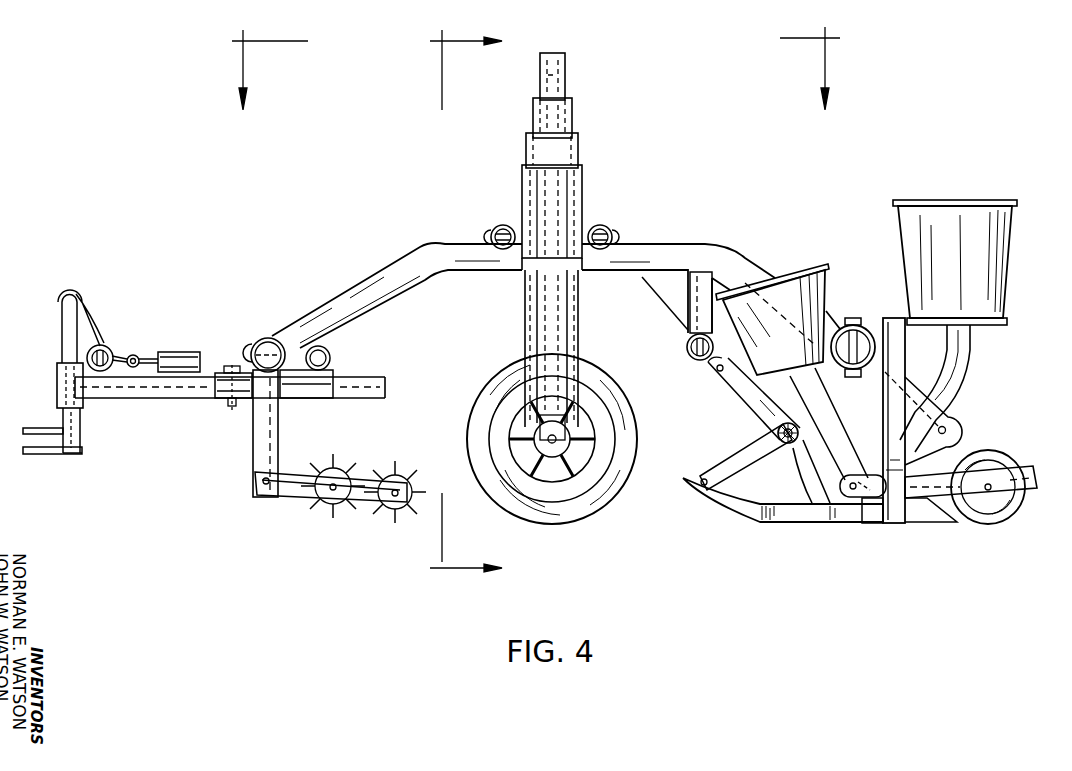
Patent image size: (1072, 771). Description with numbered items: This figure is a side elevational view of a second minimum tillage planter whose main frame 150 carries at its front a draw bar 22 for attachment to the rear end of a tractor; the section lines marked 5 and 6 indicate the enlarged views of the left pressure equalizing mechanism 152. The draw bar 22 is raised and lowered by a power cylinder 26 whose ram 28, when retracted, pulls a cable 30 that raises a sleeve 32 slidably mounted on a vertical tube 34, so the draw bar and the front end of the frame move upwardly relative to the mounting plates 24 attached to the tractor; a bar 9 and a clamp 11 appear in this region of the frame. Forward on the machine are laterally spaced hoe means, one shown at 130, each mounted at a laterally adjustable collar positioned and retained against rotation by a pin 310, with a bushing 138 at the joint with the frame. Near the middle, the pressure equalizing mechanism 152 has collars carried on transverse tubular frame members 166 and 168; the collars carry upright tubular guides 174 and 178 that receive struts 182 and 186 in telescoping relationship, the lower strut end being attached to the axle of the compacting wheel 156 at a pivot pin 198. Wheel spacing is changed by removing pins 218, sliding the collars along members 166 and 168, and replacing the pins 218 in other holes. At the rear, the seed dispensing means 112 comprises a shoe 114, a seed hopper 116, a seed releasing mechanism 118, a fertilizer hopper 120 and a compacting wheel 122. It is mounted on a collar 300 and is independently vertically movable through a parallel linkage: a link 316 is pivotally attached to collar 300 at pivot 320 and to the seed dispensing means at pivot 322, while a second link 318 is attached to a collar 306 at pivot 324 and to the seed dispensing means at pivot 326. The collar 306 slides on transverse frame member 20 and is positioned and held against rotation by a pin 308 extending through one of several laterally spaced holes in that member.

The section line 5- 5 is at (536, 68).
The section line 6- 6 is at (466, 301).
The tool bar 9 is at (308, 398).
The clamp bracket 11 is at (226, 404).
The transverse frame member 20 is at (867, 327).
The draw bar 22 is at (160, 398).
The mounting plates 24 is at (35, 455).
The hydraulic cylinder 26 is at (178, 352).
The ram 28 is at (137, 356).
The cable 30 is at (83, 328).
The sleeve 32 is at (57, 388).
The vertical tube 34 is at (81, 432).
The seed dispensing means 112 is at (795, 266).
The shoe 114 is at (731, 516).
The seed hopper 116 is at (828, 266).
The seed releasing mechanism 118 is at (822, 497).
The fertilizer hopper 120 is at (1009, 275).
The compacting wheel 122 is at (993, 451).
The hoe means 130 is at (248, 452).
The bushing 138 is at (268, 338).
The main frame 150 is at (672, 236).
The pressure equalizing mechanism 152 is at (580, 112).
The compacting wheel 156 is at (592, 513).
The transverse tubular frame member 166 is at (604, 227).
The transverse tubular frame member 168 is at (504, 226).
The upright tubular guide 174 is at (582, 182).
The upright tubular guide 178 is at (523, 173).
The strut 182 is at (578, 328).
The strut 186 is at (525, 320).
The pivot pin 198 is at (538, 117).
The pins 218 is at (612, 236).
The collar 300 is at (690, 352).
The collar 306 is at (836, 322).
The pin 308 is at (860, 378).
The pin 310 is at (243, 350).
The link 316 is at (743, 403).
The second link 318 is at (950, 418).
The pivot 320 is at (716, 372).
The pivot 322 is at (787, 444).
The pivot 324 is at (883, 395).
The pivot 326 is at (948, 429).